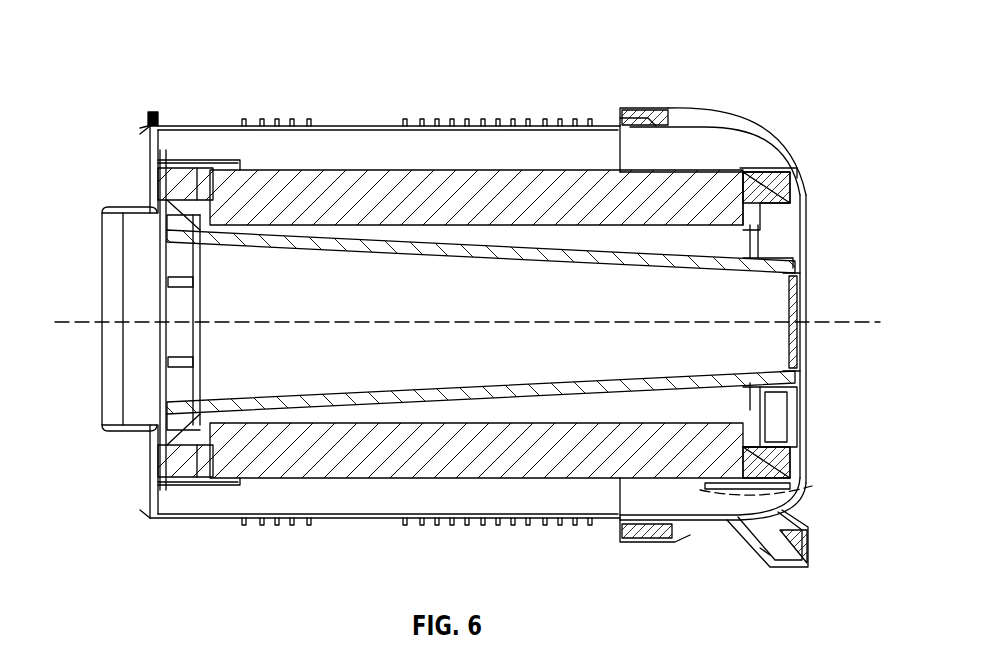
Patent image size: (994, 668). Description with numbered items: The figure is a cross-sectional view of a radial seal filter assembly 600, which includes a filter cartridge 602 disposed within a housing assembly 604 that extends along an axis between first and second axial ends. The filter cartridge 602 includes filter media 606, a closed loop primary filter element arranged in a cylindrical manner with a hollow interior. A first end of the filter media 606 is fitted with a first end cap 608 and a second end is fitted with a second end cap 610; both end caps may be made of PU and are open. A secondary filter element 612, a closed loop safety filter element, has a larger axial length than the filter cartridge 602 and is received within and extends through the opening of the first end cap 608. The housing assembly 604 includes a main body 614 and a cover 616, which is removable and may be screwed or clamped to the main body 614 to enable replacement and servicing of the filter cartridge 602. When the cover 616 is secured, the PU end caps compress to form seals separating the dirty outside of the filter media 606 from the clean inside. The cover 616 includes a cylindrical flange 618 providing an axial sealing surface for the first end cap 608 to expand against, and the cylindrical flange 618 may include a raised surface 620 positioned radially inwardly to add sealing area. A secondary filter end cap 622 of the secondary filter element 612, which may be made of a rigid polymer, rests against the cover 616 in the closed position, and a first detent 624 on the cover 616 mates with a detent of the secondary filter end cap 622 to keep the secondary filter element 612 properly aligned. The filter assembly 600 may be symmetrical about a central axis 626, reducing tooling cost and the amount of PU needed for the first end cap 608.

The radial seal filter assembly 600 is at (450, 285).
The filter cartridge 602 is at (713, 155).
The housing assembly 604 is at (587, 108).
The filter media 606 is at (647, 190).
The first end cap 608 is at (773, 190).
The second end cap 610 is at (165, 180).
The secondary filter element 612 is at (265, 407).
The main body 614 is at (340, 126).
The cover 616 is at (697, 523).
The cylindrical flange 618 is at (807, 485).
The raised surface 620 is at (805, 450).
The secondary filter end cap 622 is at (798, 295).
The first detent 624 is at (800, 330).
The central axis 626 is at (80, 322).